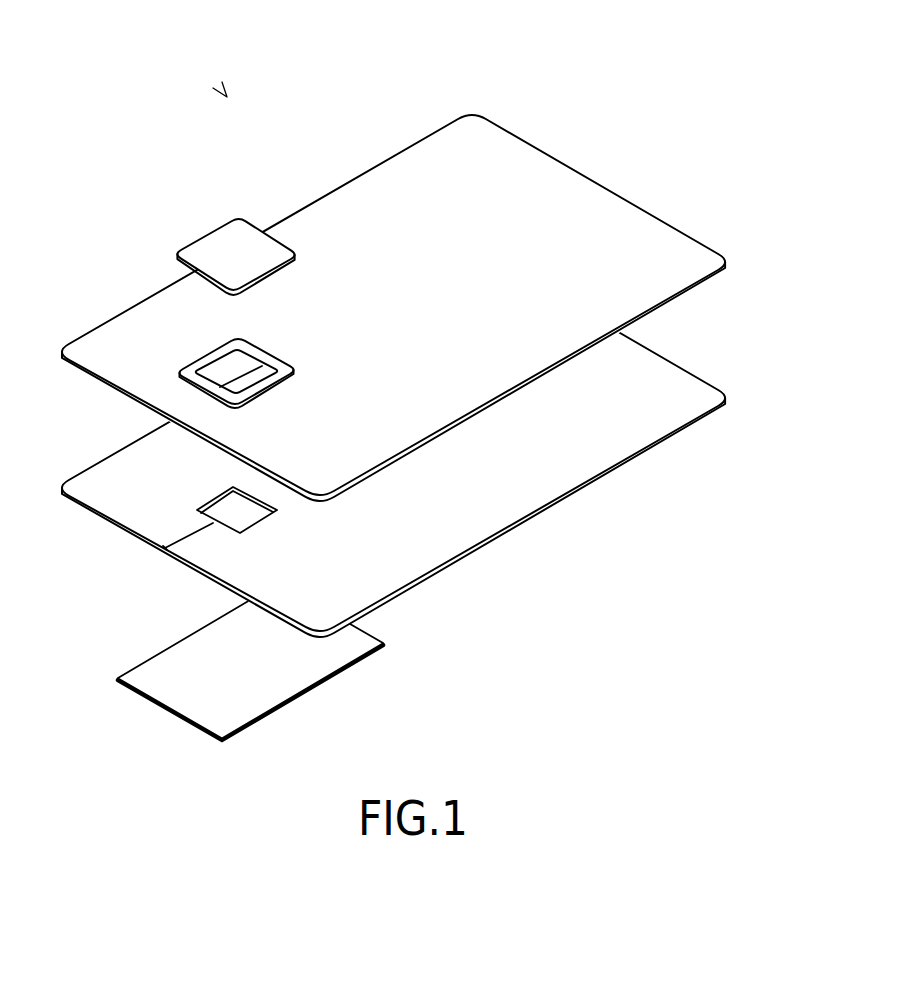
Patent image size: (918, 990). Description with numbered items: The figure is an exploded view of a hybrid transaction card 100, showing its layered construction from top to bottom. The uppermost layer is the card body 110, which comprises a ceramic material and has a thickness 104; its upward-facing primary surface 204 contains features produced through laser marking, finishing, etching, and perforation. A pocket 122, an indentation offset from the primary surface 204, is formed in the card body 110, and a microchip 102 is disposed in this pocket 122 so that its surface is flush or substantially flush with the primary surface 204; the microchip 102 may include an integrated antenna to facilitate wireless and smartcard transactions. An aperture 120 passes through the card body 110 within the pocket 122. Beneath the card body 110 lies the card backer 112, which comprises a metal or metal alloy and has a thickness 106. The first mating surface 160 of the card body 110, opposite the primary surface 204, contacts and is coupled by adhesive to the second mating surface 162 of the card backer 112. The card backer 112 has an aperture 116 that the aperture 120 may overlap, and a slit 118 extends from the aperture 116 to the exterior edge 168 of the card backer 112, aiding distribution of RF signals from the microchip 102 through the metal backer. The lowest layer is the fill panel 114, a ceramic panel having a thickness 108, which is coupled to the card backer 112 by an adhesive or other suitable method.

The hybrid transaction card 100 is at (227, 97).
The microchip 102 is at (212, 235).
The thickness 104 is at (735, 253).
The thickness 106 is at (735, 389).
The thickness 108 is at (282, 702).
The card body 110 is at (622, 195).
The card backer 112 is at (667, 442).
The fill panel 114 is at (118, 678).
The aperture 116 is at (230, 507).
The slit 118 is at (188, 537).
The aperture 120 is at (242, 362).
The pocket 122 is at (268, 390).
The first mating surface 160 is at (680, 295).
The second mating surface 162 is at (523, 483).
The exterior edge 168 is at (150, 545).
The primary surface 204 is at (513, 208).